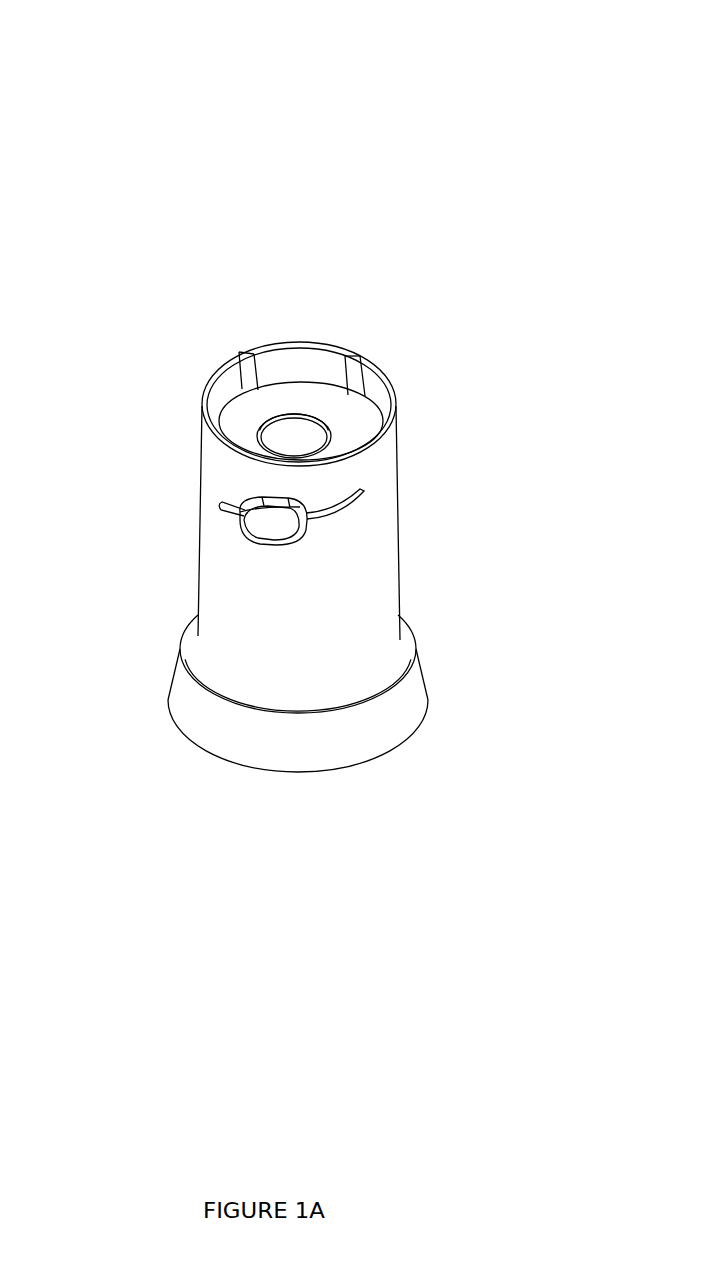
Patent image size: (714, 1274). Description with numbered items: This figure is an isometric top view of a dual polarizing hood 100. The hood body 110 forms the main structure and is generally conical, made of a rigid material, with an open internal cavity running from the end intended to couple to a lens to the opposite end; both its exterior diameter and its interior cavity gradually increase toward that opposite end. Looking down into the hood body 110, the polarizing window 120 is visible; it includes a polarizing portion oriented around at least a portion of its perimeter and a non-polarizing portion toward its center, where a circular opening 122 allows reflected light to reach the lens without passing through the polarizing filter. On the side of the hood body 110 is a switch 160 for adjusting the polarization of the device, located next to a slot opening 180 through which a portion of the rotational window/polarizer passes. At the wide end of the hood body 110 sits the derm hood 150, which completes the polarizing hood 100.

The dual polarizing hood 100 is at (631, 29).
The hood body 110 is at (376, 578).
The polarizing window 120 is at (356, 415).
The opening 122 is at (245, 438).
The derm hood 150 is at (391, 708).
The switch 160 is at (260, 534).
The slot opening 180 is at (374, 506).